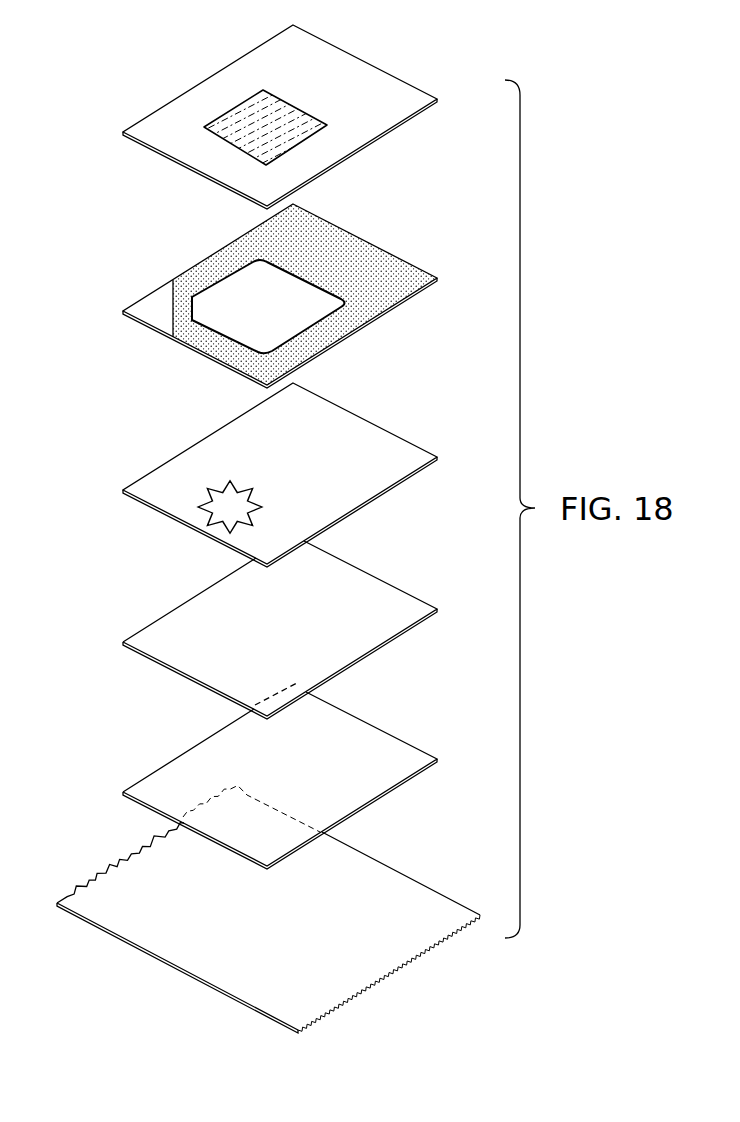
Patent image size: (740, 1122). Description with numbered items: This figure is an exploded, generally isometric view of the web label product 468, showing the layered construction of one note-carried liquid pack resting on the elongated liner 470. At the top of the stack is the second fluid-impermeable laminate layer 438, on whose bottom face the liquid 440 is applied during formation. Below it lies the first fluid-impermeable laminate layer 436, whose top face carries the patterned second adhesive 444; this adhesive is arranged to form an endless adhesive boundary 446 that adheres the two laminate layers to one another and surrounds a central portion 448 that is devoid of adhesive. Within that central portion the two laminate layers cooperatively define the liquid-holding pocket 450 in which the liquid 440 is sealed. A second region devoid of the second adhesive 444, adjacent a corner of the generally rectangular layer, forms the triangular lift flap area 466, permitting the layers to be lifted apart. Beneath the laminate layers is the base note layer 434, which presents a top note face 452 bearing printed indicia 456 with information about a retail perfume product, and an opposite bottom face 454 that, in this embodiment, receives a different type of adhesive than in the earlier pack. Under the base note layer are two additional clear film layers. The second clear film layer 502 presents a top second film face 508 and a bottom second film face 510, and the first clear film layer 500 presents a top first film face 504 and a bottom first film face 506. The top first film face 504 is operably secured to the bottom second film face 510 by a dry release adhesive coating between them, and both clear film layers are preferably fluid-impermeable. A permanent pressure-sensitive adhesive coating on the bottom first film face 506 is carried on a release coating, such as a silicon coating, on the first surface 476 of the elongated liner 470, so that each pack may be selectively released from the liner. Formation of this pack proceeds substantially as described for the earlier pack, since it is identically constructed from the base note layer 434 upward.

The web label product 468 is at (118, 93).
The second fluid-impermeable laminate layer 438 is at (417, 73).
The liquid 440 is at (257, 117).
The first fluid-impermeable laminate layer 436 is at (382, 323).
The second adhesive 444 is at (327, 252).
The adhesive boundary 446 is at (332, 287).
The liquid-holding pocket 450 is at (258, 292).
The lift flap area 466 is at (157, 307).
The central portion 448 is at (245, 320).
The base note layer 434 is at (363, 405).
The printed indicia 456 is at (370, 445).
The top note face 452 is at (198, 497).
The bottom face of the base note layer 454 is at (215, 538).
The second clear film layer 502 is at (418, 583).
The top second film face 508 is at (343, 597).
The bottom second film face 510 is at (380, 647).
The first clear film layer 500 is at (417, 733).
The top first film face 504 is at (342, 747).
The bottom first film face 506 is at (380, 795).
The elongated liner 470 is at (215, 997).
The first surface of the elongated liner 476 is at (215, 953).